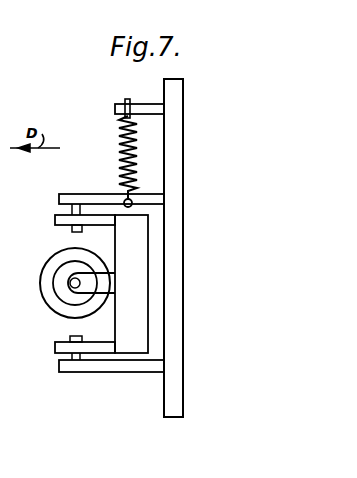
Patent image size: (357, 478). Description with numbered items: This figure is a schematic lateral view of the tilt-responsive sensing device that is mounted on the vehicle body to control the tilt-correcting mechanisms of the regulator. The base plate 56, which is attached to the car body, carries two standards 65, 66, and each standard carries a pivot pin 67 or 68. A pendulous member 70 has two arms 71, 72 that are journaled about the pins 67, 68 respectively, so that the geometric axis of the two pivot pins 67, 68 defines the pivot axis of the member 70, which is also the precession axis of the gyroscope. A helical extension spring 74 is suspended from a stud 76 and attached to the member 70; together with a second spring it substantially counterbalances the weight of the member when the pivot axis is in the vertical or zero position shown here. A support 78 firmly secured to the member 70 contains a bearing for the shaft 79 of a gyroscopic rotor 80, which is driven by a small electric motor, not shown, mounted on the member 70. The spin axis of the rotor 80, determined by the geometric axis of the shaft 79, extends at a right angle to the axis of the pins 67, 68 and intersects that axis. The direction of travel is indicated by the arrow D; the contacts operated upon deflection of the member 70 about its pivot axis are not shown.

The base plate 56 is at (185, 153).
The stud 76 is at (144, 103).
The helical extension spring 74 is at (121, 148).
The standard 65 is at (100, 184).
The arm 71 is at (58, 219).
The pivot pin 67 is at (72, 229).
The pendulous member 70 is at (147, 301).
The support 78 is at (100, 283).
The gyroscopic rotor 80 is at (44, 274).
The shaft 79 is at (62, 286).
The arm 72 is at (56, 347).
The pivot pin 68 is at (77, 357).
The standard 66 is at (122, 366).